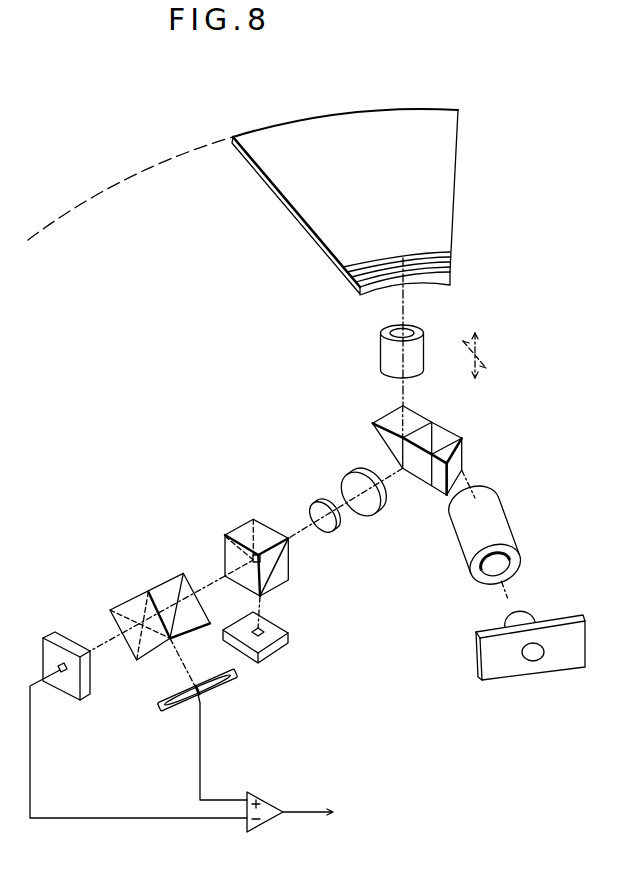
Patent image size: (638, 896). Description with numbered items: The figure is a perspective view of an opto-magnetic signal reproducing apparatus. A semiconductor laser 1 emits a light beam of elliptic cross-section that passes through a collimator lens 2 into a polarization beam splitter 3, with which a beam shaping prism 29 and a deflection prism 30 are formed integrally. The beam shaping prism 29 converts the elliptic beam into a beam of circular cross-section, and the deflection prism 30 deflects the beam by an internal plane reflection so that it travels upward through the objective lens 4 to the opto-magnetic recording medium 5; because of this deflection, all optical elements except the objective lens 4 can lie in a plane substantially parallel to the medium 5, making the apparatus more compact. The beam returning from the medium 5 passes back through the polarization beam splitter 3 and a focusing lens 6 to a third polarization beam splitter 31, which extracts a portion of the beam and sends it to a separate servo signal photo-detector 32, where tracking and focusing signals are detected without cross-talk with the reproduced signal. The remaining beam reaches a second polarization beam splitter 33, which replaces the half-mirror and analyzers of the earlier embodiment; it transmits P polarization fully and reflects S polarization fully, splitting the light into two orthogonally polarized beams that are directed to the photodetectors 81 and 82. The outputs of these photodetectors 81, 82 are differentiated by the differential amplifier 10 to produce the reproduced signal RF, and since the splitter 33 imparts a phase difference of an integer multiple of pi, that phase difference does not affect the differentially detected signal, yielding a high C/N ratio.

The semiconductor laser 1 is at (532, 617).
The collimator lens 2 is at (503, 525).
The polarization beam splitter 3 is at (440, 430).
The objective lens 4 is at (388, 350).
The opto-magnetic recording medium 5 is at (448, 175).
The focusing lens 6 is at (394, 517).
The differential amplifier 10 is at (267, 823).
The beam shaping prism 29 is at (446, 494).
The deflection prism 30 is at (377, 417).
The third polarization beam splitter 31 is at (295, 588).
The servo signal photo-detector 32 is at (288, 650).
The second polarization beam splitter 33 is at (158, 582).
The photodetector 81 is at (233, 680).
The photodetector 82 is at (72, 700).